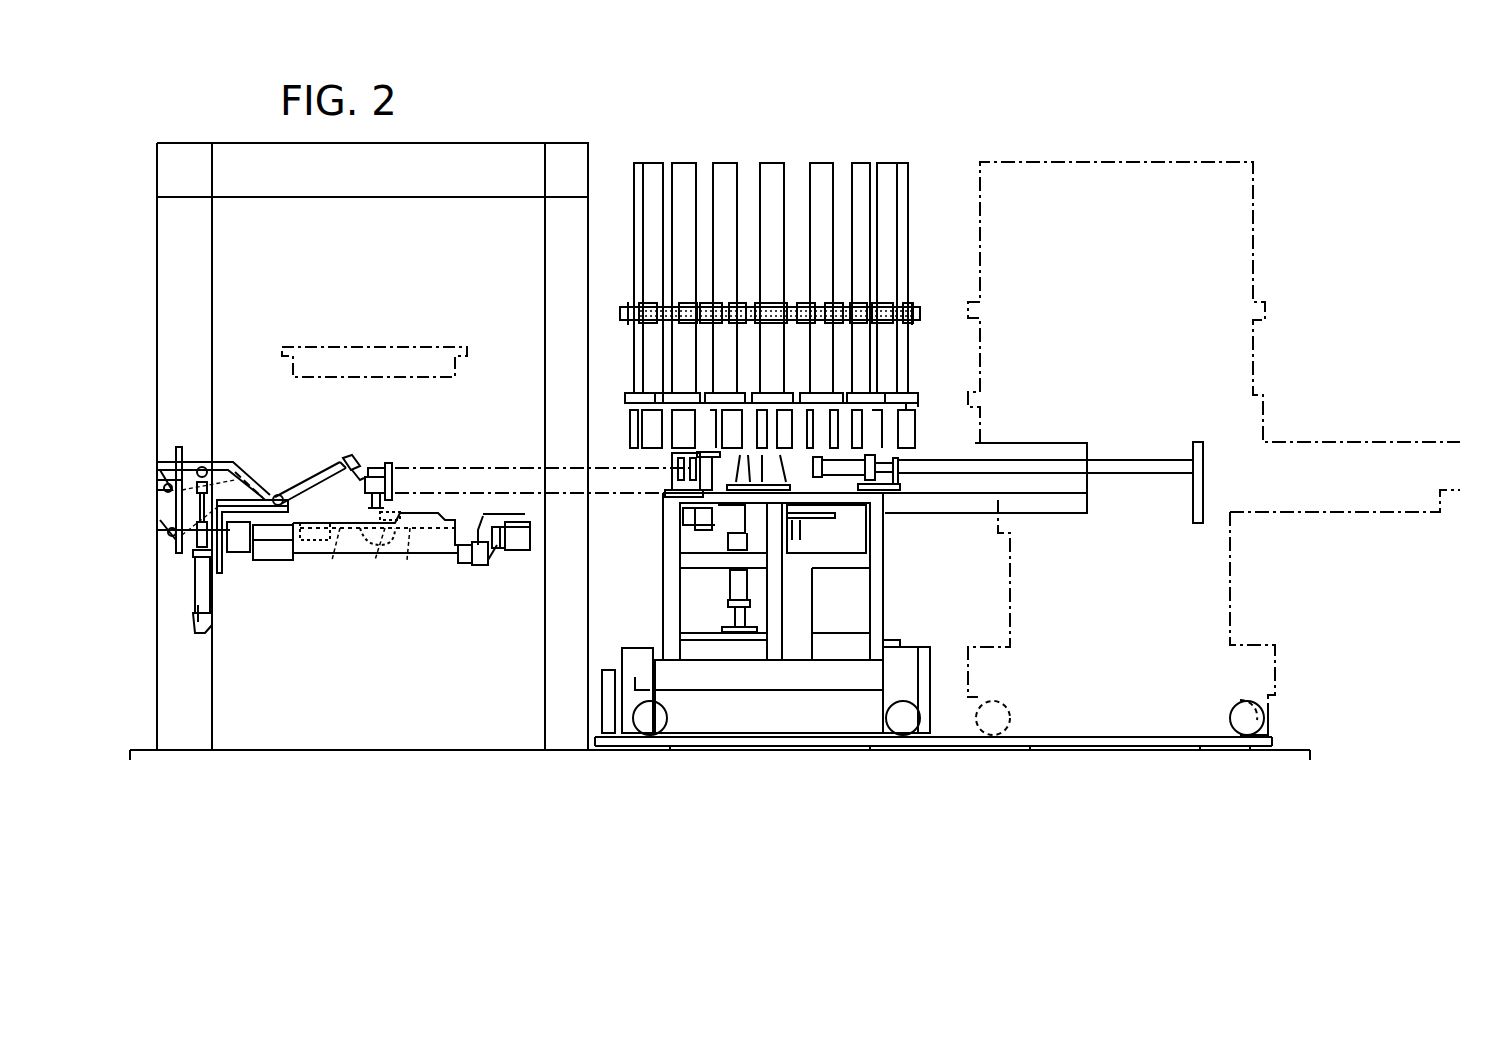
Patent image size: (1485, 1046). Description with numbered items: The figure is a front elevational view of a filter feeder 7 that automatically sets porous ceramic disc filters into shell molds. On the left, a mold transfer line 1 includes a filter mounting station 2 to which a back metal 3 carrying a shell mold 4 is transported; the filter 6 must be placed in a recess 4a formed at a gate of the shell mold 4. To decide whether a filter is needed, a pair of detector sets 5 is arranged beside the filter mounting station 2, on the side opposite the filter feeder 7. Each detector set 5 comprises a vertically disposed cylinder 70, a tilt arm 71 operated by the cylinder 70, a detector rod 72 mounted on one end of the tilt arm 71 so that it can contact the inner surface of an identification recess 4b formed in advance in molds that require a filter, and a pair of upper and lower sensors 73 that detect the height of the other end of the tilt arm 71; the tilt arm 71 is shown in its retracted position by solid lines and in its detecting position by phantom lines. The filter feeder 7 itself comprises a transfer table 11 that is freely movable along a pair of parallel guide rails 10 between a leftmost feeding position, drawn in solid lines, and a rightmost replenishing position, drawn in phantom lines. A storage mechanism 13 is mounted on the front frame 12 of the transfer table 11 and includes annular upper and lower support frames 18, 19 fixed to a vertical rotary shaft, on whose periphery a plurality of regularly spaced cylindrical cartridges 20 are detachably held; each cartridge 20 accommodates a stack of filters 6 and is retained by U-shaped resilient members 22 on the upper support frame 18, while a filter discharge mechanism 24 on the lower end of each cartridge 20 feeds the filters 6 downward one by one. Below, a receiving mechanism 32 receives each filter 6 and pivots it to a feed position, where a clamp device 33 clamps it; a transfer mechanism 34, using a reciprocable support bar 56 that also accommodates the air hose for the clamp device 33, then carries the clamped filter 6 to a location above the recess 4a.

The mold transfer line 1 is at (293, 608).
The filter mounting station 2 is at (389, 422).
The back metal 3 is at (435, 553).
The shell mold 4 is at (377, 557).
The recess 4a is at (376, 565).
The identification recess 4b is at (319, 563).
The detector sets 5 is at (257, 462).
The filter 6 is at (392, 526).
The filter feeder 7 is at (993, 120).
The guide rails 10 is at (1077, 740).
The transfer table 11 is at (722, 740).
The front frame 12 is at (844, 592).
The storage mechanism 13 is at (785, 268).
The upper support frame 18 is at (885, 310).
The lower support frame 19 is at (915, 440).
The cylindrical cartridges 20 is at (773, 162).
The resilient members 22 is at (657, 320).
The filter discharge mechanism 24 is at (628, 462).
The receiving mechanism 32 is at (714, 577).
The clamp device 33 is at (384, 468).
The transfer mechanism 34 is at (1057, 418).
The support bar 56 is at (496, 467).
The cylinder 70 is at (199, 608).
The tilt arm 71 is at (312, 480).
The detector rod 72 is at (352, 463).
The sensors 73 is at (175, 498).